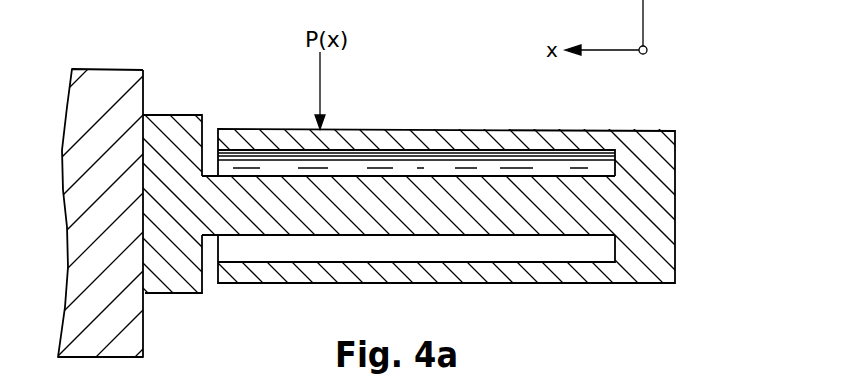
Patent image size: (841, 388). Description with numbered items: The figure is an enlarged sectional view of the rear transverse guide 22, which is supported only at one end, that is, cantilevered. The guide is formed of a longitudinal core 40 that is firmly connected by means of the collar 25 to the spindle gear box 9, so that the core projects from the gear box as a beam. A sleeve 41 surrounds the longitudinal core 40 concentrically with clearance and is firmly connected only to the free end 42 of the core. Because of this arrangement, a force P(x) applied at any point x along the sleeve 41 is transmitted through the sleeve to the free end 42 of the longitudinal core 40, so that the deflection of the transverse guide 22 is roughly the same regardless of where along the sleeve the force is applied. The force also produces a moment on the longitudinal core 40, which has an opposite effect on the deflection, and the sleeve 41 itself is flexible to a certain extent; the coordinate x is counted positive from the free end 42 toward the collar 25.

The spindle gear box 9 is at (82, 112).
The collar 25 is at (178, 128).
The longitudinal core 40 is at (485, 190).
The sleeve 41 is at (410, 143).
The free end 42 is at (643, 215).
The rear transverse guide 22 is at (677, 149).